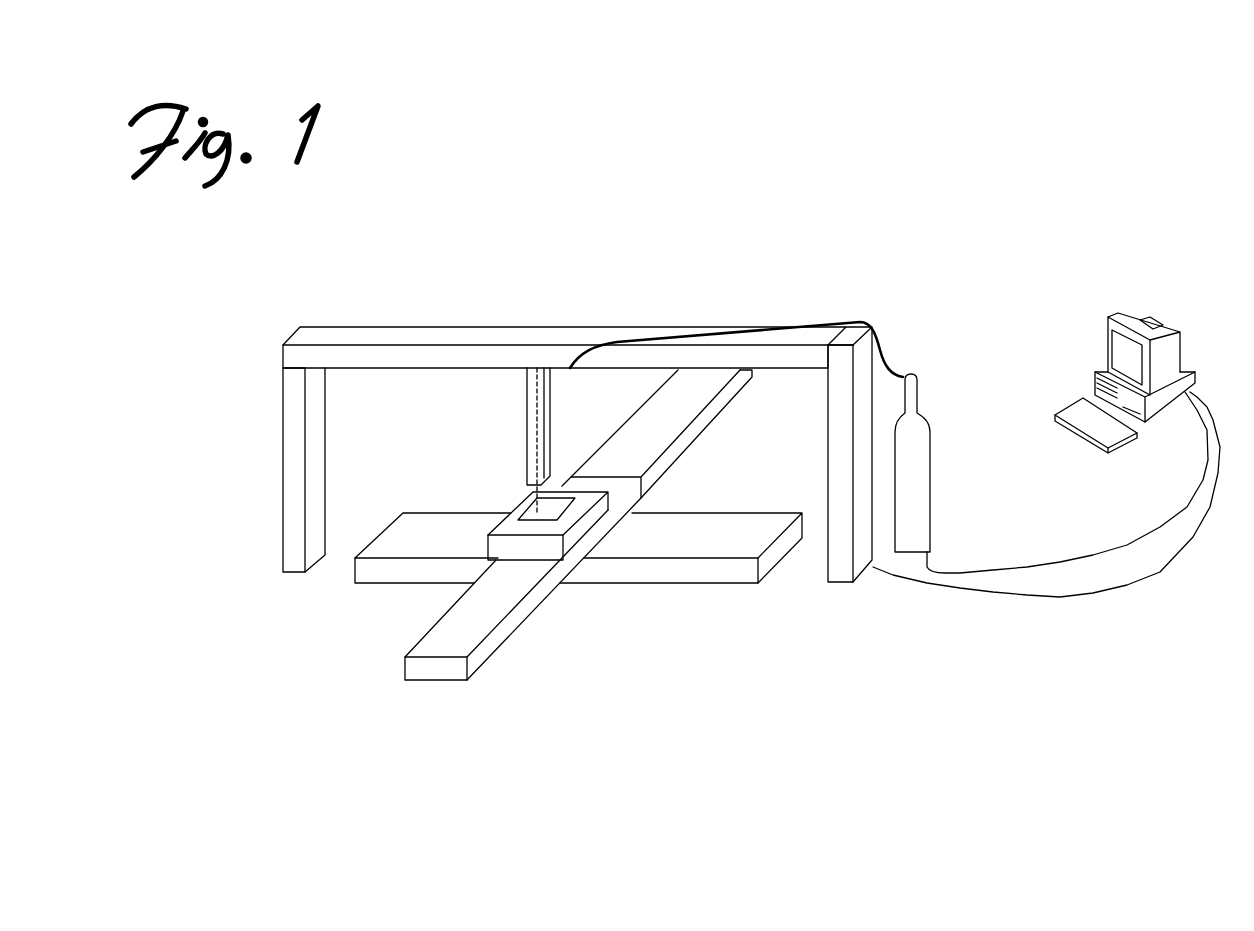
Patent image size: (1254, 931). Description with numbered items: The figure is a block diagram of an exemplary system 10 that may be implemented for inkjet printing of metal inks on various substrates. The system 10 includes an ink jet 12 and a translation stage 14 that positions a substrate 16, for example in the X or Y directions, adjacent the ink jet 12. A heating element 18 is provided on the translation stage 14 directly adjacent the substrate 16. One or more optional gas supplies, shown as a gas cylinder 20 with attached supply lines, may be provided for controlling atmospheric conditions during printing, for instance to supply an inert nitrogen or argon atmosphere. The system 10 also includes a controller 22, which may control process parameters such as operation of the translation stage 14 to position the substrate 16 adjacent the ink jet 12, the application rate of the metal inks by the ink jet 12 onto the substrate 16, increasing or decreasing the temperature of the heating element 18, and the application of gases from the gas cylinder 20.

The system 10 is at (607, 226).
The ink jet 12 is at (525, 466).
The translation stage 14 is at (563, 584).
The substrate 16 is at (530, 500).
The heating element 18 is at (513, 510).
The gas cylinder 20 is at (930, 482).
The controller 22 is at (1107, 317).